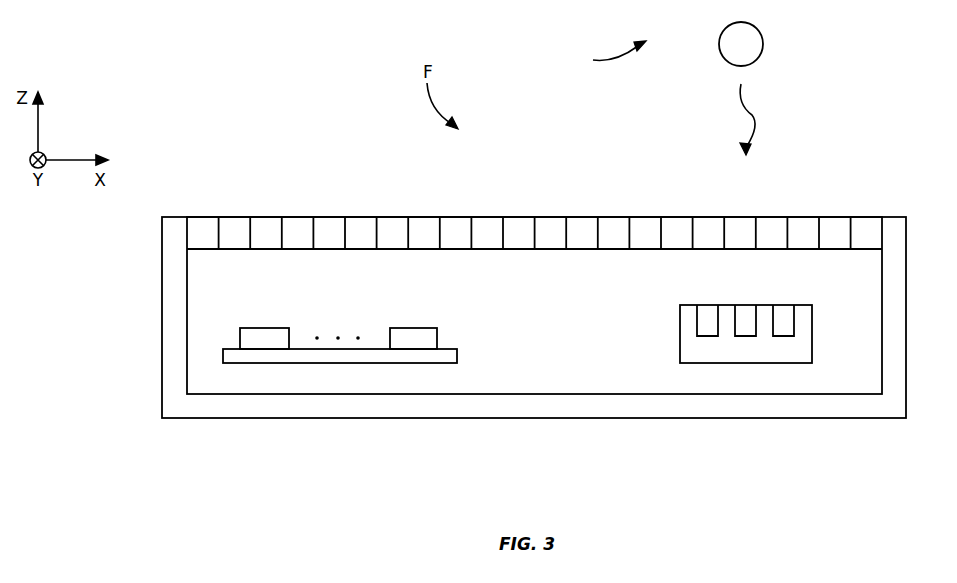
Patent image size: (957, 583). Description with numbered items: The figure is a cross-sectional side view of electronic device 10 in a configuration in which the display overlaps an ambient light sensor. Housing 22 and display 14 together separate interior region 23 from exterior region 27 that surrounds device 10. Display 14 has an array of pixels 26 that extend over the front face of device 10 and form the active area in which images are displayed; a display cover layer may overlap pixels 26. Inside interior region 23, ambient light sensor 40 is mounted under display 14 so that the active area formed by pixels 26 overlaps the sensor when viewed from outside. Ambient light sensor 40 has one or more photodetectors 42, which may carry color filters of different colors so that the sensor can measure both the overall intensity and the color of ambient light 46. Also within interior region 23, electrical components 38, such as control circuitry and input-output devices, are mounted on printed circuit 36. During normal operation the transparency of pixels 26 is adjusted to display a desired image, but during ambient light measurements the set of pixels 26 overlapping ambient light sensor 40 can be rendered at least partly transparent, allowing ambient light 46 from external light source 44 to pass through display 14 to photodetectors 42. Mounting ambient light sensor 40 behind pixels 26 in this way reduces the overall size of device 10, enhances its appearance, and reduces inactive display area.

The electronic device 10 is at (131, 209).
The display 14 is at (362, 192).
The housing 22 is at (240, 418).
The interior region 23 is at (492, 376).
The pixels 26 is at (522, 226).
The exterior region 27 is at (606, 56).
The printed circuit 36 is at (306, 364).
The electrical components 38 is at (410, 328).
The ambient light sensor 40 is at (680, 330).
The photodetectors 42 is at (784, 311).
The external light source 44 is at (763, 44).
The ambient light 46 is at (752, 115).